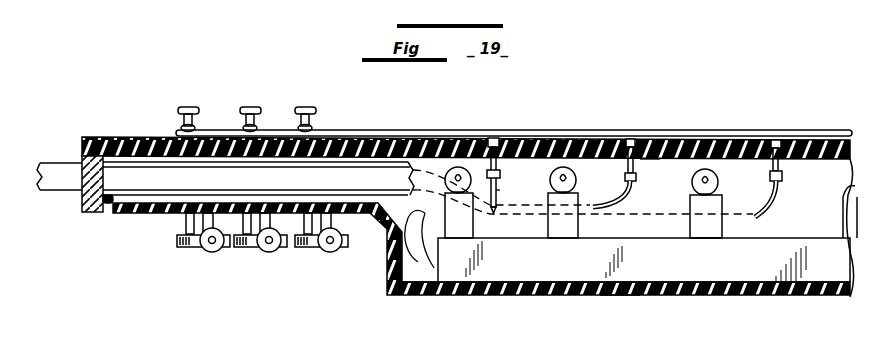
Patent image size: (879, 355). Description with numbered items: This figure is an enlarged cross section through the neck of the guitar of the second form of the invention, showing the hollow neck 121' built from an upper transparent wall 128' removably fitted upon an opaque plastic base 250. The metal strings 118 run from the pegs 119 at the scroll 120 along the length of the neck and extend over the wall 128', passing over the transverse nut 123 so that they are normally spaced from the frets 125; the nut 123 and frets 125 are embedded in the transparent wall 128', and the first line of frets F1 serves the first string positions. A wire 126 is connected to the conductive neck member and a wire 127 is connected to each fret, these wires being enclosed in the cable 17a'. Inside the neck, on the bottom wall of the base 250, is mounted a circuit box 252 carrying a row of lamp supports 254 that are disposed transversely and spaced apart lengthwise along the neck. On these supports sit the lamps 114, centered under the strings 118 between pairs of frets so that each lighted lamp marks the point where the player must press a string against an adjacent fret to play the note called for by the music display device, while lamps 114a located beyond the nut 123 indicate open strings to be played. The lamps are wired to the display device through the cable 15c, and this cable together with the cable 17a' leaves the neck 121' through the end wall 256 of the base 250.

The metal strings 118 is at (543, 135).
The pegs 119 is at (322, 116).
The scroll 120 is at (143, 217).
The end wall 256 is at (110, 214).
The cable 17a' is at (59, 206).
The cable 15c is at (408, 248).
The circuit box 252 is at (587, 288).
The opaque plastic base 250 is at (781, 297).
The hollow neck 121' is at (633, 317).
The lamps 114a is at (475, 167).
The lamps 114 is at (723, 173).
The lamp supports 254 is at (690, 202).
The first line of frets F1 is at (647, 140).
The nut 123 is at (523, 119).
The wire 126 is at (497, 188).
The upper transparent wall 128' is at (616, 145).
The frets 125 is at (786, 140).
The wire 127 is at (776, 207).